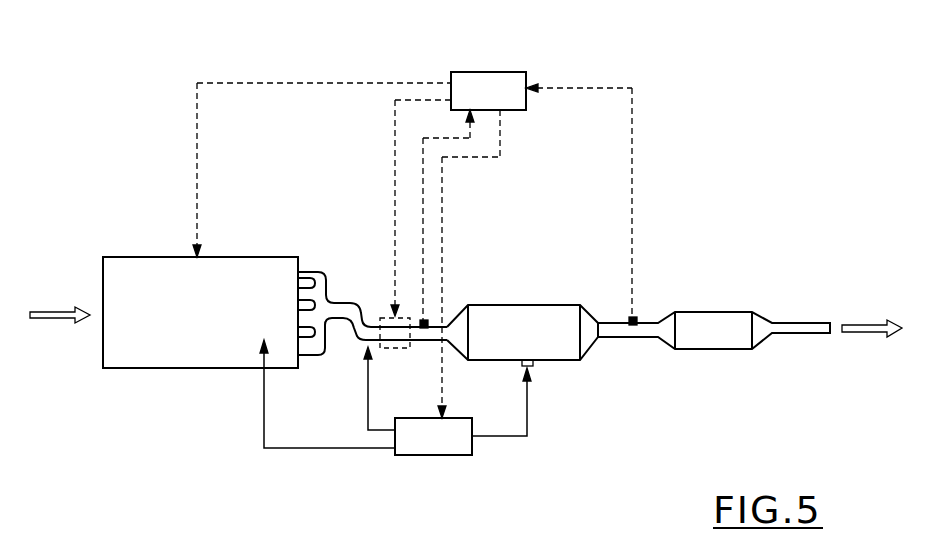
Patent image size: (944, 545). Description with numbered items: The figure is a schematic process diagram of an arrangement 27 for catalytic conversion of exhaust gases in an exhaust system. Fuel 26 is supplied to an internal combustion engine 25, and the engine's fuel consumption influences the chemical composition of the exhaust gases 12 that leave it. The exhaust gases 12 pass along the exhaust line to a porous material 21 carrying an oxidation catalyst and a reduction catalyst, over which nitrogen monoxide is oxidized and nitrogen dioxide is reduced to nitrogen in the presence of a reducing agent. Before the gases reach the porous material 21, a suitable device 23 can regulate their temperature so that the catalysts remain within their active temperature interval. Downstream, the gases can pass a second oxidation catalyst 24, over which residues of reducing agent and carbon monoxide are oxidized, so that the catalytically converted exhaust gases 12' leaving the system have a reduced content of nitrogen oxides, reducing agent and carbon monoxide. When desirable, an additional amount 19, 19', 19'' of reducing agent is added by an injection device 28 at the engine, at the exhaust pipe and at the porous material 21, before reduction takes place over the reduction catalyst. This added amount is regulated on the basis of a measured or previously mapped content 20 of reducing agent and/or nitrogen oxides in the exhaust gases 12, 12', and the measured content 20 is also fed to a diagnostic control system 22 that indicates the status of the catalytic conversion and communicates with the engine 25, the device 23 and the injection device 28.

The exhaust gases 12 is at (363, 265).
The catalytically converted exhaust gases 12' is at (872, 280).
The additional amount of reducing agent 19 is at (286, 428).
The additional amount of reducing agent 19' is at (339, 431).
The additional amount of reducing agent 19'' is at (513, 442).
The measured content of reducing agent or nitrogen oxides 20 is at (632, 250).
The porous material 21 is at (542, 305).
The diagnostic control system 22 is at (510, 72).
The temperature regulating device 23 is at (380, 318).
The second oxidation catalyst 24 is at (723, 312).
The internal combustion engine 25 is at (130, 258).
The fuel 26 is at (48, 310).
The arrangement for catalytic conversion of exhaust gases 27 is at (737, 142).
The injection device 28 is at (413, 455).